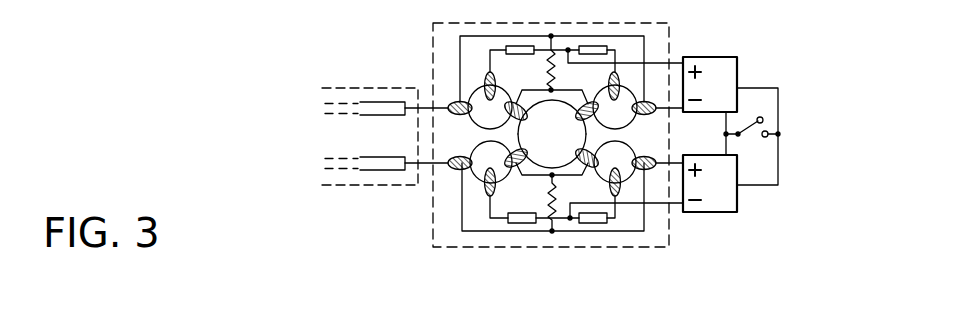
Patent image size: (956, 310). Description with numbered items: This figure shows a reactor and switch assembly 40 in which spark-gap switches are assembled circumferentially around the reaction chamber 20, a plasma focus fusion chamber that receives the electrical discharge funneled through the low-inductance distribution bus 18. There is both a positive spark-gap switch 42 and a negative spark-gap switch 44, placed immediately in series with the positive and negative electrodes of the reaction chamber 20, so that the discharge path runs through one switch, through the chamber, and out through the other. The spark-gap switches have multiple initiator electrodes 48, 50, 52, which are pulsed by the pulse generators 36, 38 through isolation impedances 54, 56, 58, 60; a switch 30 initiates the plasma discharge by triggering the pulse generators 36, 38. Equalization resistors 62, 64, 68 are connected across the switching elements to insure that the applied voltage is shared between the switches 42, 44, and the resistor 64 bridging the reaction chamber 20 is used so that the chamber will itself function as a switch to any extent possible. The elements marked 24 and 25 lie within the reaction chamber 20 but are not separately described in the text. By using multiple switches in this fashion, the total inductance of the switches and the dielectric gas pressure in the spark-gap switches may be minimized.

The distribution bus 18 is at (386, 187).
The reaction chamber 20 is at (545, 152).
The first transducer element 24 is at (572, 118).
The second transducer element 25 is at (572, 147).
The switch 30 is at (741, 137).
The pulse generator 36 is at (712, 57).
The pulse generator 38 is at (707, 212).
The reactor and switch assembly 40 is at (537, 249).
The positive spark-gap switch 42 is at (485, 78).
The negative spark-gap switch 44 is at (466, 148).
The initiator electrode 48 is at (608, 80).
The initiator electrode 50 is at (618, 190).
The initiator electrode 52 is at (485, 189).
The isolation impedance 54 is at (513, 46).
The isolation impedance 56 is at (594, 46).
The isolation impedance 58 is at (600, 225).
The isolation impedance 60 is at (517, 225).
The equalization resistor 62 is at (548, 72).
The equalization resistor 64 is at (590, 117).
The equalization resistor 68 is at (556, 187).